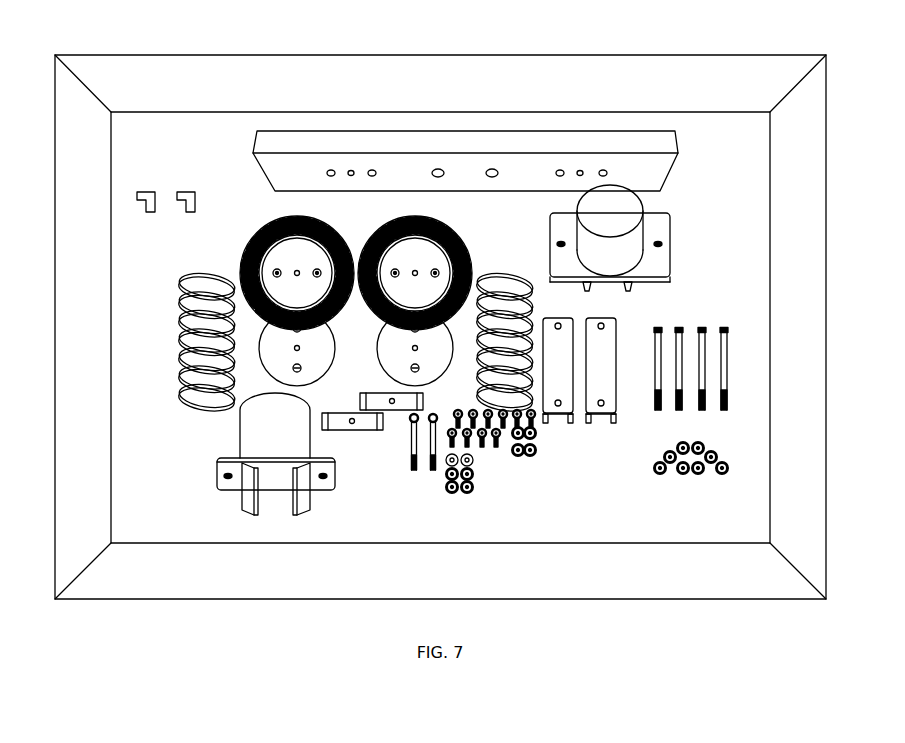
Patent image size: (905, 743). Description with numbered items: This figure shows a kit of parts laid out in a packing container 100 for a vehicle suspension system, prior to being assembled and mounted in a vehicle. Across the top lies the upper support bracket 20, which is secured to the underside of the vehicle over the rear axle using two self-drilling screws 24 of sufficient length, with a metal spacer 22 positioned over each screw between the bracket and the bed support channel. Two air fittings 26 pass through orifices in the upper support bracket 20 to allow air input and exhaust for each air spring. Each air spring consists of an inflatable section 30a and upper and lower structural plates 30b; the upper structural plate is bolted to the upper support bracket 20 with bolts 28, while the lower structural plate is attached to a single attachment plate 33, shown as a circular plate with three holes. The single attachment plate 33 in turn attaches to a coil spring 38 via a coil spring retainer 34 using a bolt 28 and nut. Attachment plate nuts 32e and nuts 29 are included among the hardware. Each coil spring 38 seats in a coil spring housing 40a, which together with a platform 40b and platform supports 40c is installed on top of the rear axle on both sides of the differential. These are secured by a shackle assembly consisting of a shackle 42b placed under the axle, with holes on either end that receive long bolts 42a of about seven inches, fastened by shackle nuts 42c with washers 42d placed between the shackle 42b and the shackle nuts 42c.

The packing container 100 is at (435, 54).
The upper support bracket 20 is at (675, 166).
The air fitting 26 is at (172, 178).
The inflatable section of air spring 30a is at (271, 240).
The structural plate of air spring 30b is at (294, 244).
The single attachment plate 33 is at (381, 345).
The coil spring 38 is at (178, 309).
The coil spring housing 40a is at (646, 235).
The platform 40b is at (672, 249).
The platform support 40c is at (586, 289).
The long bolt 42a is at (660, 327).
The shackle 42b is at (558, 425).
The shackle nut 42c is at (660, 475).
The washer 42d is at (679, 448).
The coil spring retainer 34 is at (350, 431).
The self-drilling screw 24 is at (412, 473).
The bolt 28 is at (476, 407).
The spacer 22 is at (470, 464).
The nut 29 is at (532, 458).
The attachment plate nut 32e is at (452, 494).